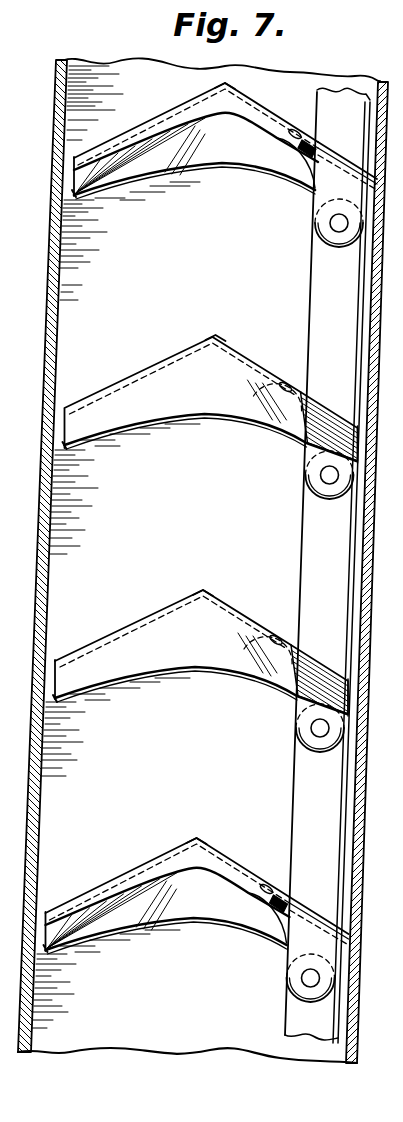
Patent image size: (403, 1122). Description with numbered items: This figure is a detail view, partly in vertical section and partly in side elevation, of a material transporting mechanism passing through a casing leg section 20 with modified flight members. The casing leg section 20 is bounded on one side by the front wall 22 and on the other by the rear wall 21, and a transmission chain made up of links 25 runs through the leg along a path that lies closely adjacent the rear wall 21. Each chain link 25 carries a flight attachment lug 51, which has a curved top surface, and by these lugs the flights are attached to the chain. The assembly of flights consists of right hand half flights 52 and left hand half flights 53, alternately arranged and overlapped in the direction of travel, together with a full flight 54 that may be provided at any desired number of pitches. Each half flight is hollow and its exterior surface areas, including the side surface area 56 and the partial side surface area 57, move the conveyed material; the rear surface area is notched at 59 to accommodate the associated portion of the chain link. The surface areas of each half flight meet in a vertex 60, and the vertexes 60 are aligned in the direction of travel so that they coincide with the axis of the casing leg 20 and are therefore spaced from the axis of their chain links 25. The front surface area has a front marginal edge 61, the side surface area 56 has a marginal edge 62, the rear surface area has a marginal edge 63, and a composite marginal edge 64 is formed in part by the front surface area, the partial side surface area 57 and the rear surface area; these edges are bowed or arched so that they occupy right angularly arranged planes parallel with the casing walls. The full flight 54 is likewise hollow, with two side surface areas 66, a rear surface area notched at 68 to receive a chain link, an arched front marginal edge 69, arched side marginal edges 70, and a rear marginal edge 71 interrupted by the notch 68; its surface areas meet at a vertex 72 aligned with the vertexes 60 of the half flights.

The casing leg section 20 is at (45, 1057).
The rear wall 21 is at (369, 660).
The front wall 22 is at (37, 605).
The chain links 25 is at (316, 287).
The flight attachment lug 51 is at (297, 153).
The right hand half flight 52 is at (65, 447).
The left hand half flight 53 is at (75, 195).
The full flight 54 is at (56, 700).
The side surface area 56 is at (183, 375).
The partial side surface area 57 is at (227, 102).
The notch 59 is at (316, 148).
The vertex 60 is at (225, 84).
The front marginal edge 61 is at (74, 158).
The marginal edge 62 is at (224, 170).
The marginal edge 63 is at (378, 196).
The composite marginal edge 64 is at (236, 122).
The side surface areas 66 is at (173, 628).
The notch 68 is at (310, 667).
The marginal edge 69 is at (55, 667).
The marginal edges 70 is at (230, 672).
The marginal edge 71 is at (354, 703).
The vertex 72 is at (204, 589).